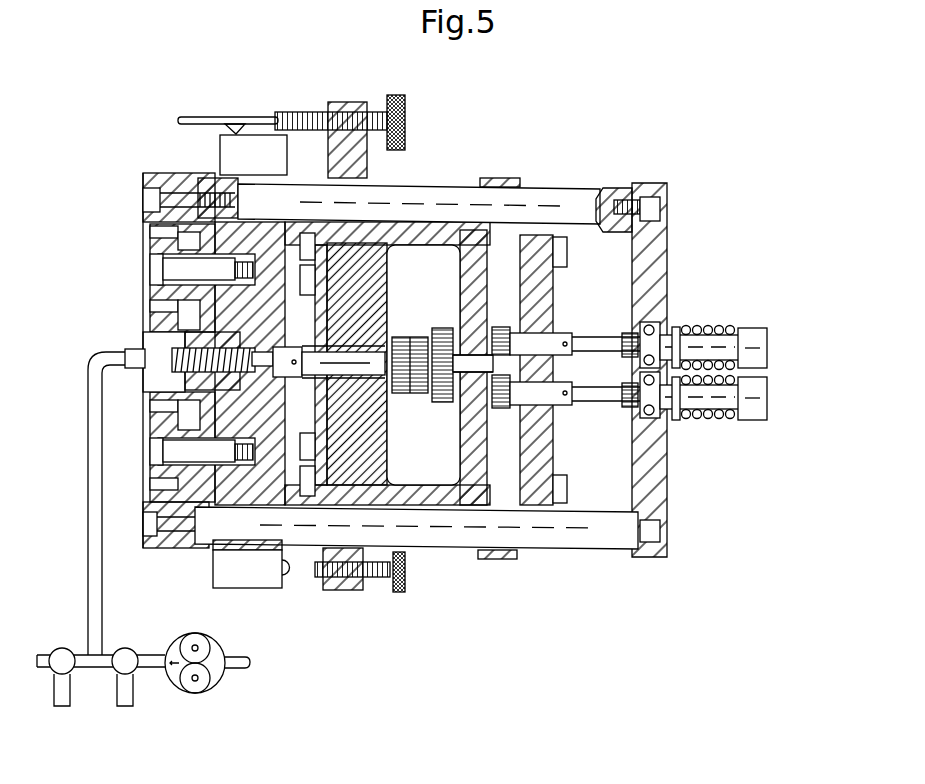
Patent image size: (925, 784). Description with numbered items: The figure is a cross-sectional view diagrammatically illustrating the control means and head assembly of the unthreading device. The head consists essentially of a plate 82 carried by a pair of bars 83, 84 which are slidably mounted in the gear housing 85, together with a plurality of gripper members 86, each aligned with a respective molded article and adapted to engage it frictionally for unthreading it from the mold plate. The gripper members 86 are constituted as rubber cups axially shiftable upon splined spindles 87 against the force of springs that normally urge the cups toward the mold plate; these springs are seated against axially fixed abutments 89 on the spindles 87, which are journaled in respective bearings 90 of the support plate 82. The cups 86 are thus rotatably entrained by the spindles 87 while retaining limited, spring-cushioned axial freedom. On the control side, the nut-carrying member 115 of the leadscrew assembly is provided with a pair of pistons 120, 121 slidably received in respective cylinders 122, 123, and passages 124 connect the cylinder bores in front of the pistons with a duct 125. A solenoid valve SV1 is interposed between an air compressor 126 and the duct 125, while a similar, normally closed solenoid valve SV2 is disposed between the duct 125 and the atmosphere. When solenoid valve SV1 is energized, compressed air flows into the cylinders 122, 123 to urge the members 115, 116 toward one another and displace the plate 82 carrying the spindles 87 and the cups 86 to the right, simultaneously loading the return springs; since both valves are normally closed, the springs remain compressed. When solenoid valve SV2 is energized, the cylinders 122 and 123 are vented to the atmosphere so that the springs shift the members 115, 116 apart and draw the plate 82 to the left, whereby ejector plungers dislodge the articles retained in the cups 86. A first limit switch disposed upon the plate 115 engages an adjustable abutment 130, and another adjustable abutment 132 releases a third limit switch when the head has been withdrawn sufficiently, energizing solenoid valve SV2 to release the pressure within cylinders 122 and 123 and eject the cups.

The plate 82 is at (668, 510).
The bar 83 is at (566, 186).
The bar 84 is at (592, 551).
The gear housing 85 is at (497, 560).
The gripper member 86 is at (767, 330).
The splined spindle 87 is at (733, 326).
The axially fixed abutment 89 is at (675, 327).
The bearing 90 is at (660, 428).
The nut-carrying member 115 is at (262, 551).
The member 116 is at (168, 181).
The piston 120 is at (148, 292).
The piston 121 is at (148, 484).
The cylinder 122 is at (148, 236).
The cylinder 123 is at (148, 420).
The passage 124 is at (148, 313).
The duct 125 is at (103, 590).
The air compressor 126 is at (218, 686).
The adjustable abutment 130 is at (377, 580).
The adjustable abutment 132 is at (313, 112).
The solenoid valve SV1 is at (133, 706).
The solenoid valve SV2 is at (70, 706).